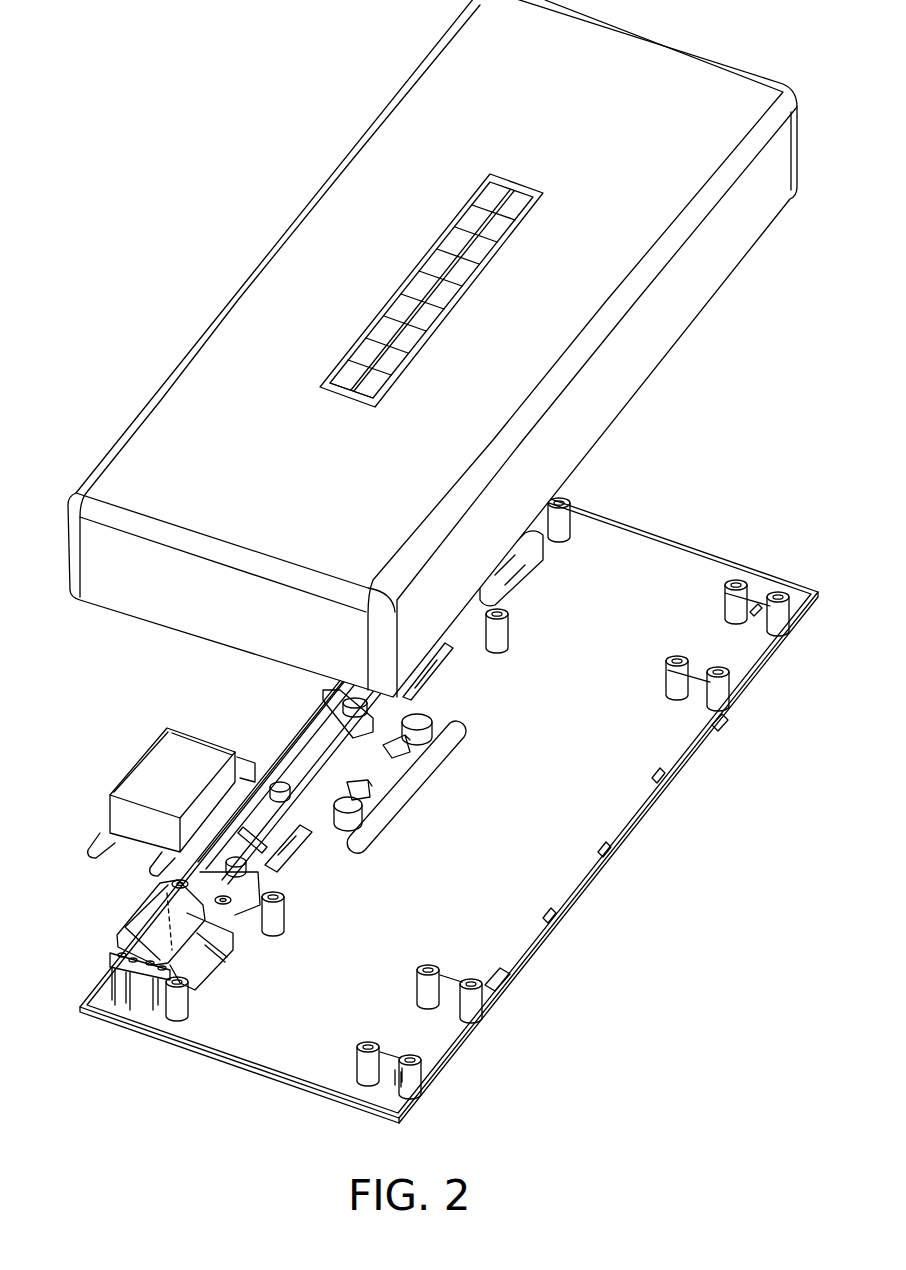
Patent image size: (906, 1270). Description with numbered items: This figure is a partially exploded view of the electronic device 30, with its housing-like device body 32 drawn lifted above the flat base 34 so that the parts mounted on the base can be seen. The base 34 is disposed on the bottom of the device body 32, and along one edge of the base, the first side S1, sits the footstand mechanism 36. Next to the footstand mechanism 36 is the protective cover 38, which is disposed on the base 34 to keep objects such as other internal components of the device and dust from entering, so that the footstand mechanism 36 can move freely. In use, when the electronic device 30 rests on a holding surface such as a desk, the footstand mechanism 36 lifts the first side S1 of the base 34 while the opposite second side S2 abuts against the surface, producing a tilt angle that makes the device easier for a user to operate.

The electronic device 30 is at (258, 70).
The device body 32 is at (308, 240).
The base 34 is at (240, 1028).
The footstand mechanism 36 is at (112, 913).
The protective cover 38 is at (150, 770).
The first side S1 is at (88, 995).
The second side S2 is at (583, 893).